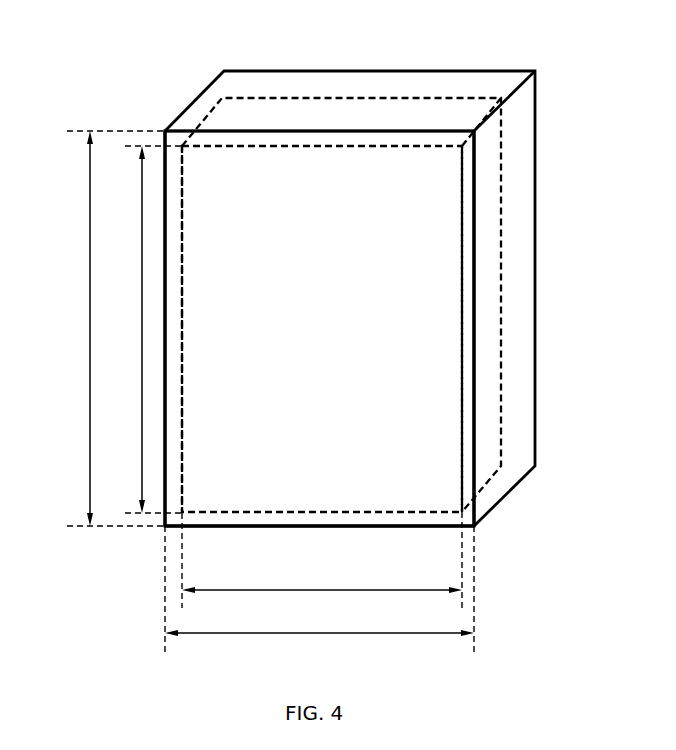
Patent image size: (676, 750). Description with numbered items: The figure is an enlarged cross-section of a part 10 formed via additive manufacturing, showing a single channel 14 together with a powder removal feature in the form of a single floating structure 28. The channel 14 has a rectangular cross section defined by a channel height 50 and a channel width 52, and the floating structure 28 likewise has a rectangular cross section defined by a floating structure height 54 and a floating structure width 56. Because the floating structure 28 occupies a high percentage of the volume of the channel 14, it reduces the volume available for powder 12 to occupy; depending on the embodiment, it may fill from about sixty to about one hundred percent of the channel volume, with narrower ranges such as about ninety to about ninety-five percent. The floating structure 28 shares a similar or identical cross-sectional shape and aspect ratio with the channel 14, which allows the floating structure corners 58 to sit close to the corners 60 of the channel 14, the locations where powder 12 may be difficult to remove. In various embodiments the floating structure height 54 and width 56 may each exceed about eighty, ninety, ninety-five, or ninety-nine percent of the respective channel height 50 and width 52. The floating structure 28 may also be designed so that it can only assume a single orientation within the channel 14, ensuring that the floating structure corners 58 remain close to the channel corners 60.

The part 10 is at (470, 52).
The powder 12 is at (372, 528).
The channel 14 is at (230, 527).
The floating structure 28 is at (420, 514).
The channel height 50 is at (88, 326).
The channel width 52 is at (328, 635).
The floating structure height 54 is at (140, 320).
The floating structure width 56 is at (313, 592).
The floating structure corners 58 is at (185, 146).
The corners 60 is at (162, 130).